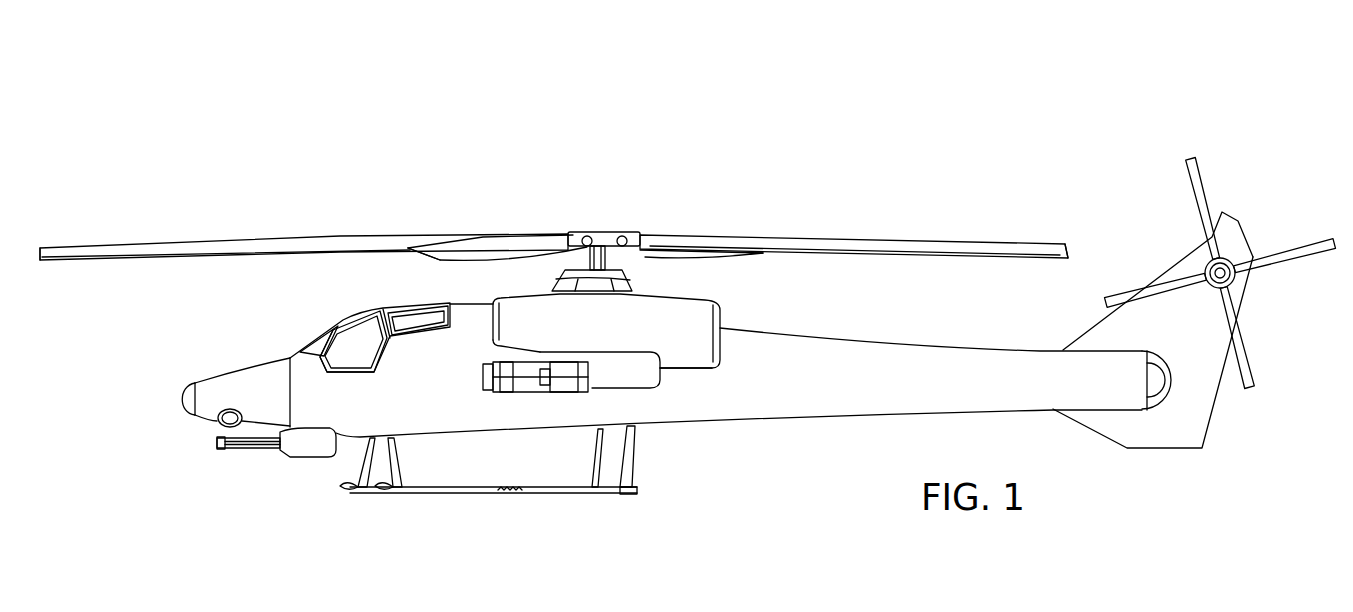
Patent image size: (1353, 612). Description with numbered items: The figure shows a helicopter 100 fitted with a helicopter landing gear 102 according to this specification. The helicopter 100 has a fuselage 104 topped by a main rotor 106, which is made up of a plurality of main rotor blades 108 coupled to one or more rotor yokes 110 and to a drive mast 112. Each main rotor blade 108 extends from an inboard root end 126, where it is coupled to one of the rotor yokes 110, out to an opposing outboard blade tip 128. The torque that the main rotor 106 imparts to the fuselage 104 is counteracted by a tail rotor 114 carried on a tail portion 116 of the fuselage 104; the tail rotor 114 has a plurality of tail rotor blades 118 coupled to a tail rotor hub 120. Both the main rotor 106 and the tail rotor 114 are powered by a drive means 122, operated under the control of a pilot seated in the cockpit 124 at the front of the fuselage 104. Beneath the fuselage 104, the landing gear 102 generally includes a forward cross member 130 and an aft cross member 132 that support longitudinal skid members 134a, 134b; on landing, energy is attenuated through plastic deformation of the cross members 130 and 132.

The helicopter 100 is at (790, 100).
The helicopter landing gear 102 is at (539, 513).
The fuselage 104 is at (724, 422).
The main rotor 106 is at (268, 232).
The main rotor blade 108 is at (167, 234).
The rotor yoke 110 is at (600, 232).
The drive mast 112 is at (610, 258).
The tail rotor 114 is at (1260, 288).
The tail portion 116 is at (1187, 256).
The tail rotor blade 118 is at (1200, 173).
The tail rotor hub 120 is at (1236, 250).
The drive means 122 is at (722, 352).
The cockpit 124 is at (317, 333).
The inboard root end 126 is at (583, 233).
The outboard blade tip 128 is at (42, 247).
The forward cross member 130 is at (397, 457).
The aft cross member 132 is at (630, 453).
The longitudinal skid member 134a is at (440, 497).
The longitudinal skid member 134b is at (343, 490).